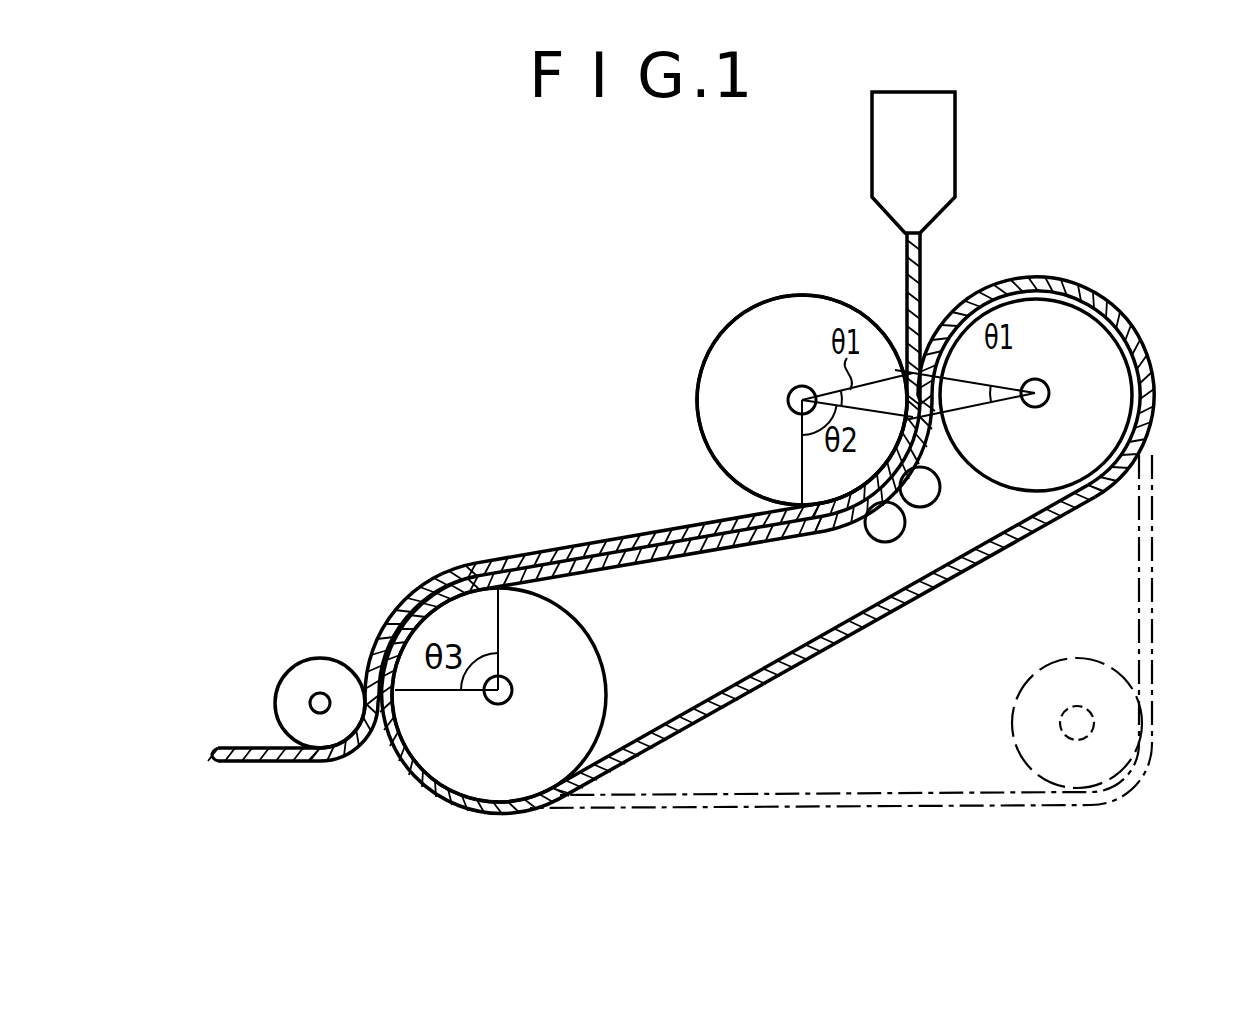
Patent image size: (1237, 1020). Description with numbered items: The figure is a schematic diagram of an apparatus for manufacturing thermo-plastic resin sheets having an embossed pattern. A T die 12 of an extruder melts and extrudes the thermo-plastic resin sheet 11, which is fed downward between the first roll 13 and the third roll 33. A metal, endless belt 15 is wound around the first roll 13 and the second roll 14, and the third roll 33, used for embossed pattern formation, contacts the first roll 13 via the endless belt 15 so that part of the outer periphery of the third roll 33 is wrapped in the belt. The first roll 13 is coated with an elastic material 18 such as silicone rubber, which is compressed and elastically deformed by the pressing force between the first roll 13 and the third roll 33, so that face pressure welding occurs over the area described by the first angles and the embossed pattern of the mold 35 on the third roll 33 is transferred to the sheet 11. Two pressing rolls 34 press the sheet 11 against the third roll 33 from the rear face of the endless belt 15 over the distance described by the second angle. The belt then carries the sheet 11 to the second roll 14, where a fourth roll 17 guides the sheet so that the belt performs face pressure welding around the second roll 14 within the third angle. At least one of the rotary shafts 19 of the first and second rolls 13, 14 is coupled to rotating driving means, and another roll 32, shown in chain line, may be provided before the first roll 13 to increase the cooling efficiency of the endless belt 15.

The thermo-plastic resin sheet 11 is at (627, 532).
The T die 12 is at (942, 158).
The first roll 13 is at (1100, 360).
The second roll 14 is at (513, 760).
The metal, endless belt 15 is at (845, 628).
The fourth roll 17 is at (310, 680).
The elastic material 18 is at (1082, 287).
The rotary shafts 19 is at (1035, 393).
The another roll 32 is at (1013, 717).
The third roll 33 is at (760, 335).
The pressing rolls 34 is at (923, 508).
The mold 35 is at (715, 342).